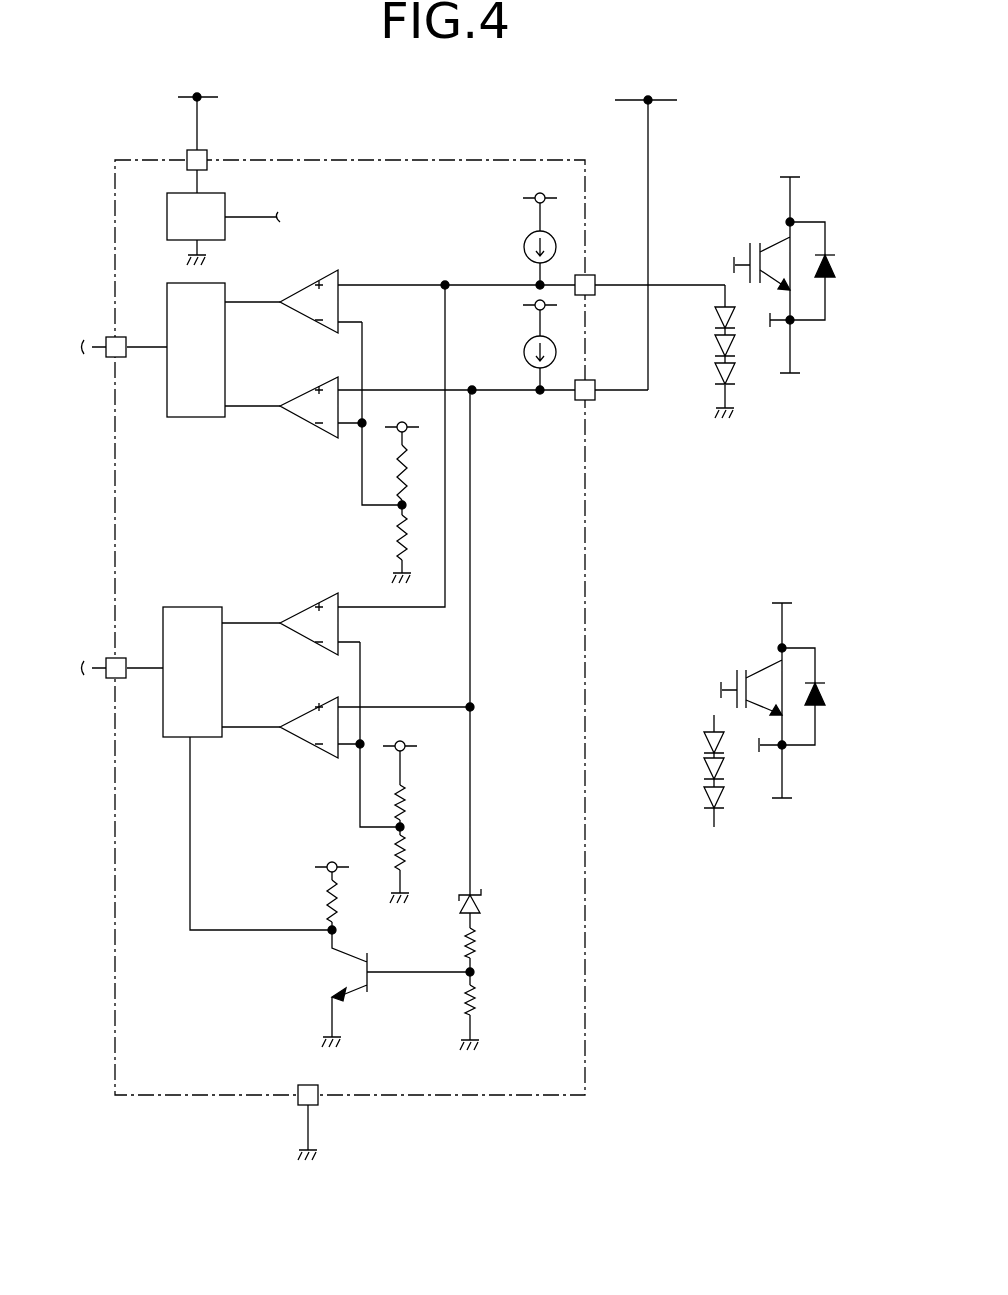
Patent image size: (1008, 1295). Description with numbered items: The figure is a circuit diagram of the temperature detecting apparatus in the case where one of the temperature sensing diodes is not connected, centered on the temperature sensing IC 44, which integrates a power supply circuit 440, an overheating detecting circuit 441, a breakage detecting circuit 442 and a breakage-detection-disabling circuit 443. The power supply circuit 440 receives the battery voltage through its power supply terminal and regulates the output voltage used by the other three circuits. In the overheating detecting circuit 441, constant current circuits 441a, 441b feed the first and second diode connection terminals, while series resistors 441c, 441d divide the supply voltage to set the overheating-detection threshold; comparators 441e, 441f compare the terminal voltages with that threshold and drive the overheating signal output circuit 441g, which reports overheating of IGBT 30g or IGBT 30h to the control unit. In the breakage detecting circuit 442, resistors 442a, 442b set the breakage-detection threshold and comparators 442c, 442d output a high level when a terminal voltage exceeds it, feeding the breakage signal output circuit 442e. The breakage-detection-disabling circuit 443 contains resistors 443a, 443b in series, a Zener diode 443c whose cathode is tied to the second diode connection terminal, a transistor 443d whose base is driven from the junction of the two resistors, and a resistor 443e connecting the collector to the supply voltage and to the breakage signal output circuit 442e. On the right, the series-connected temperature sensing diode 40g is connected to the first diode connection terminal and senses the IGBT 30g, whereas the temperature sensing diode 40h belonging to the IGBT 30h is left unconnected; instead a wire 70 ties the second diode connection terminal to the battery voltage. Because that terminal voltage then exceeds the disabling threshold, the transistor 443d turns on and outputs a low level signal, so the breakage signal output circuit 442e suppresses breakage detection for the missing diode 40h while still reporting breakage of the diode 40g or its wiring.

The temperature sensing IC 44 is at (358, 160).
The power supply circuit 440 is at (222, 199).
The overheating detecting circuit 441 is at (370, 252).
The constant current circuit 441a is at (524, 247).
The constant current circuit 441b is at (524, 360).
The resistor 441c is at (396, 475).
The resistor 441d is at (398, 530).
The comparator 441e is at (306, 290).
The comparator 441f is at (306, 395).
The overheating signal output circuit 441g is at (185, 417).
The breakage detecting circuit 442 is at (252, 572).
The resistor 442a is at (432, 796).
The resistor 442b is at (432, 848).
The comparator 442c is at (304, 612).
The comparator 442d is at (304, 717).
The breakage signal output circuit 442e is at (187, 607).
The breakage-detection-disabling circuit 443 is at (290, 977).
The resistor 443a is at (480, 941).
The resistor 443b is at (480, 996).
The Zener diode 443c is at (484, 896).
The transistor 443d is at (350, 990).
The resistor 443e is at (325, 902).
The wire 70 is at (648, 175).
The IGBT 30g is at (752, 235).
The temperature sensing diode 40g is at (712, 370).
The IGBT 30h is at (743, 665).
The temperature sensing diode 40h is at (702, 797).